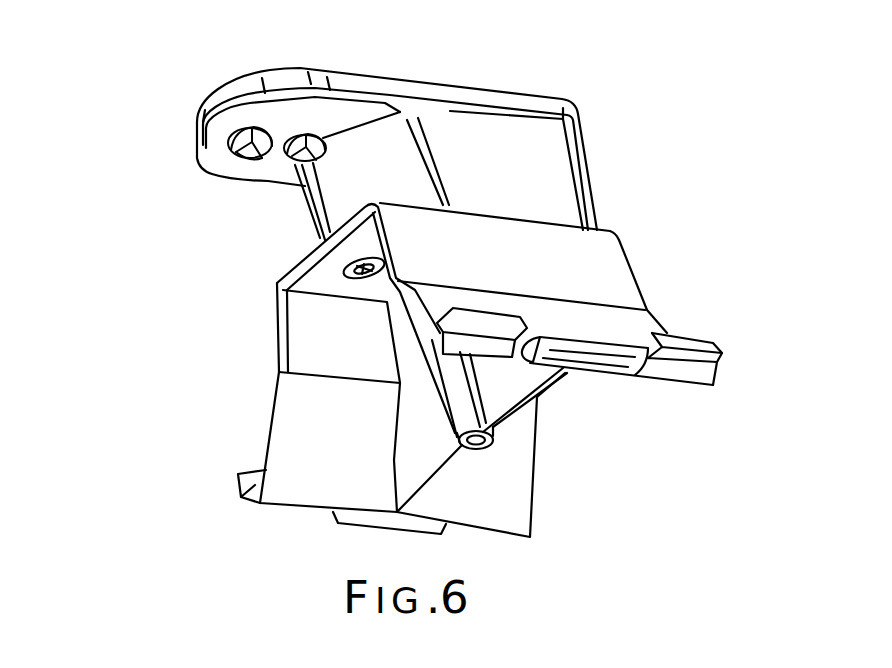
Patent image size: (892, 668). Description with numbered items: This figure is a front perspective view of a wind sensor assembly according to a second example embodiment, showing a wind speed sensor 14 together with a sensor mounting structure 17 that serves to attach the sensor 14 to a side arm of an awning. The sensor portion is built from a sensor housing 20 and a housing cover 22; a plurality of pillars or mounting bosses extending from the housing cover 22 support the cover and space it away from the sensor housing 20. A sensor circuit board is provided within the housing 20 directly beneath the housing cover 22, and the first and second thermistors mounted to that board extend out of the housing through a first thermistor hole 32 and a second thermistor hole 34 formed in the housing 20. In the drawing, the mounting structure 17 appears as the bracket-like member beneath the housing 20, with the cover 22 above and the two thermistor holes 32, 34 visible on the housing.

The wind speed sensor 14 is at (636, 134).
The housing cover 22 is at (306, 73).
The sensor housing 20 is at (438, 146).
The second thermistor hole 34 is at (233, 157).
The first thermistor hole 32 is at (298, 185).
The sensor mounting structure 17 is at (270, 436).